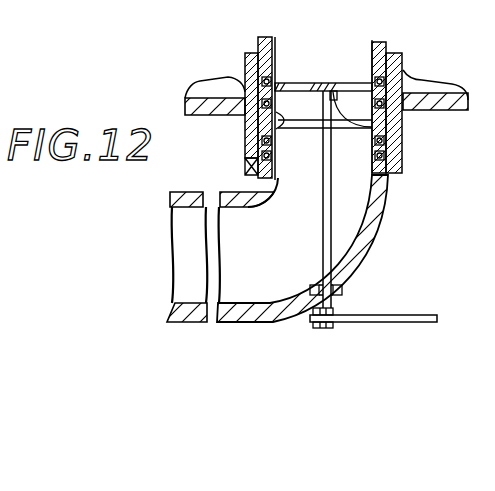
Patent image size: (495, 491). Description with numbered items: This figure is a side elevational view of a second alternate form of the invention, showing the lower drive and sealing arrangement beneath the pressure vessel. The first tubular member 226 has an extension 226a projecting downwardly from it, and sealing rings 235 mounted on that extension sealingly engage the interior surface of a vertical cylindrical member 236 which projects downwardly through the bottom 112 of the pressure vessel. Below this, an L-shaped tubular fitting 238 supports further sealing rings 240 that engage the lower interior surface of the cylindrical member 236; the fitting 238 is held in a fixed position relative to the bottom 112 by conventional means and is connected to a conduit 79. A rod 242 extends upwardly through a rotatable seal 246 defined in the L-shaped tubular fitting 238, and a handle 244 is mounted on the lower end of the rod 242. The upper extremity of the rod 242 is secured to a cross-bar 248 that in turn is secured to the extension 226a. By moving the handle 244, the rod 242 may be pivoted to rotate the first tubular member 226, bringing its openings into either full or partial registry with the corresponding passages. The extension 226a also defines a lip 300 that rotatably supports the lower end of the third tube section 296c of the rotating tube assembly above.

The conduit 79 is at (168, 223).
The bottom of the pressure vessel 112 is at (186, 116).
The first tubular member 226 is at (260, 42).
The extension 226a is at (260, 132).
The sealing rings 235 is at (281, 71).
The vertical cylindrical member 236 is at (405, 59).
The L-shaped tubular fitting 238 is at (387, 205).
The sealing rings 240 is at (246, 167).
The rod 242 is at (318, 190).
The handle 244 is at (375, 313).
The rotatable seal 246 is at (340, 281).
The cross-bar 248 is at (262, 90).
The third tube section 296c is at (372, 66).
The lip 300 is at (353, 163).